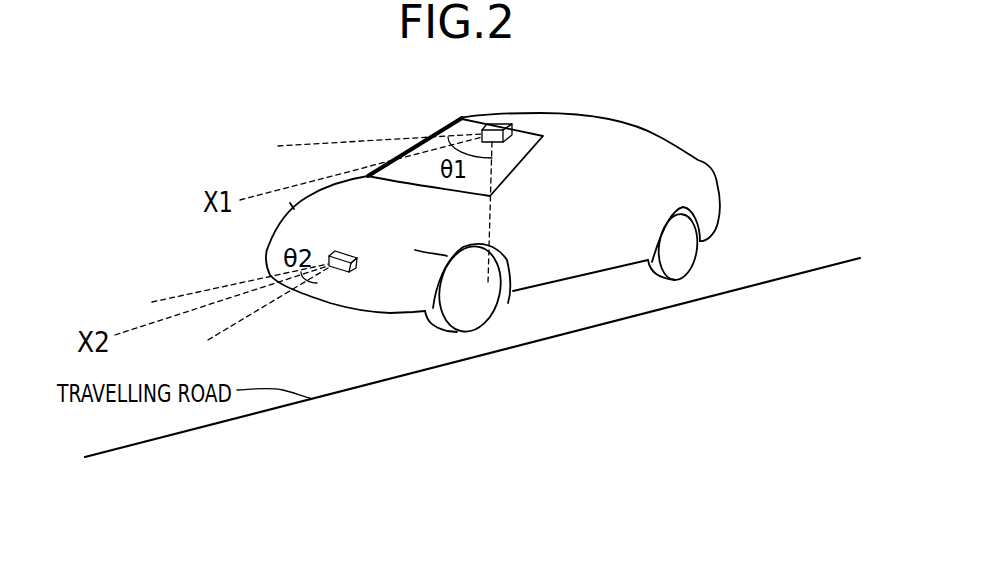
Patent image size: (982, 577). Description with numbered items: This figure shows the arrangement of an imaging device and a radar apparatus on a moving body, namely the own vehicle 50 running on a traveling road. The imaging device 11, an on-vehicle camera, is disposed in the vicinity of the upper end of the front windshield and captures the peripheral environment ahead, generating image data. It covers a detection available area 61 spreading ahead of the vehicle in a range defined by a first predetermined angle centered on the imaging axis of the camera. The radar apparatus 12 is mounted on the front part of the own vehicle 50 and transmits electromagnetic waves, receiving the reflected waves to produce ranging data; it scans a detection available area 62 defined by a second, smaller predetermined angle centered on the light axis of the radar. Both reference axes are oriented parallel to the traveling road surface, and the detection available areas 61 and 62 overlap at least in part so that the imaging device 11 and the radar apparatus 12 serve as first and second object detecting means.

The own vehicle 50 is at (617, 121).
The imaging device 11 is at (499, 123).
The radar apparatus 12 is at (357, 263).
The detection available area of the imaging device 61 is at (300, 143).
The detection available area of the radar apparatus 62 is at (168, 295).